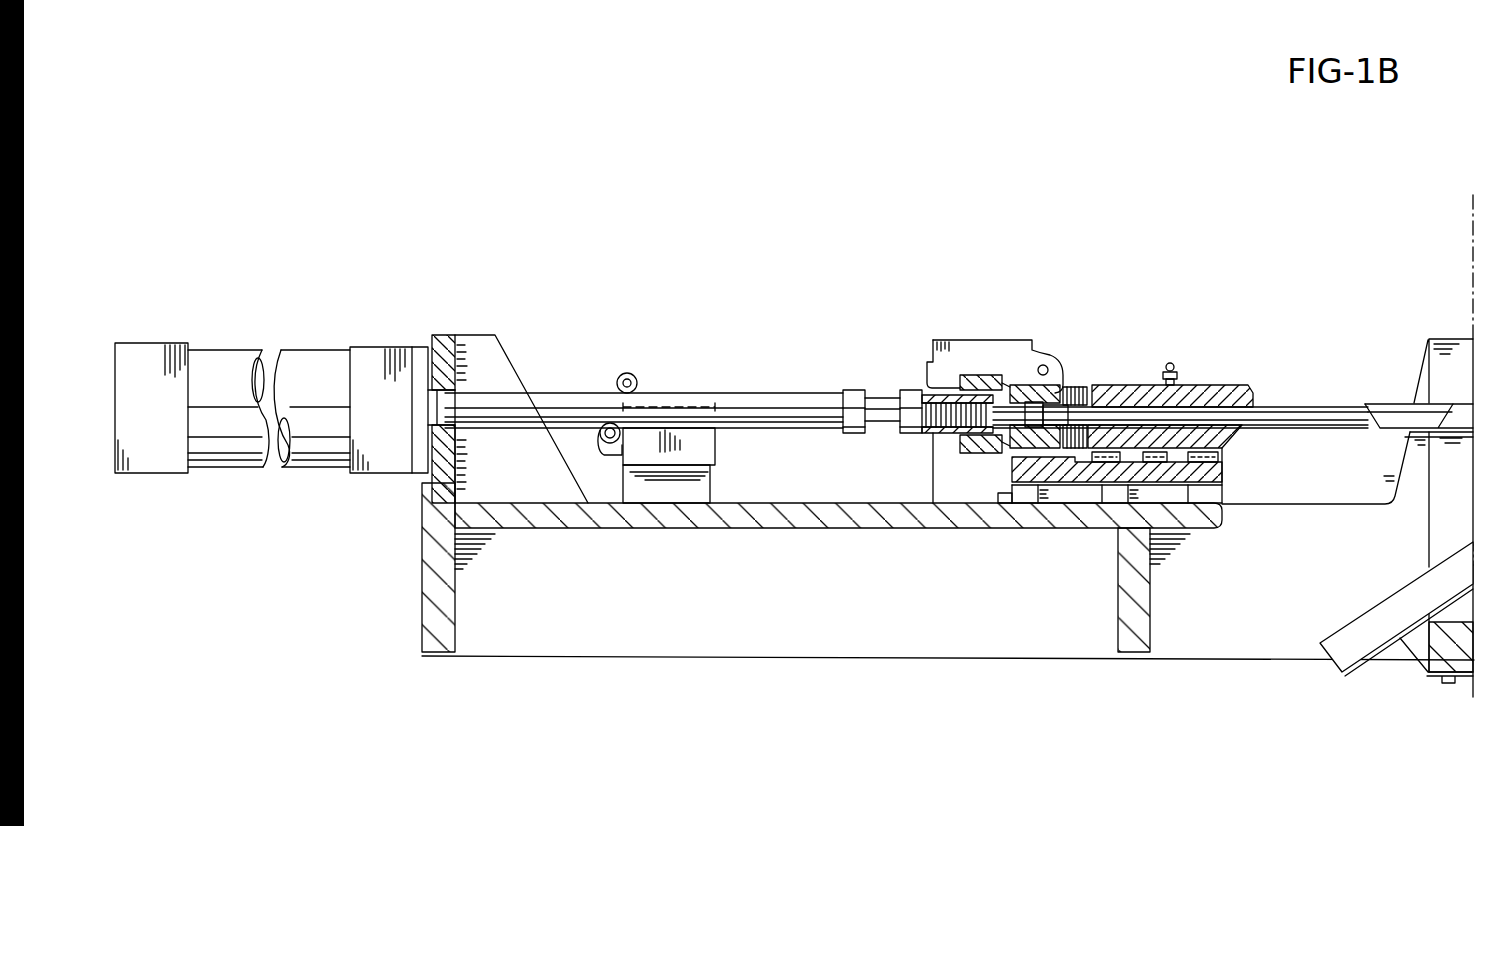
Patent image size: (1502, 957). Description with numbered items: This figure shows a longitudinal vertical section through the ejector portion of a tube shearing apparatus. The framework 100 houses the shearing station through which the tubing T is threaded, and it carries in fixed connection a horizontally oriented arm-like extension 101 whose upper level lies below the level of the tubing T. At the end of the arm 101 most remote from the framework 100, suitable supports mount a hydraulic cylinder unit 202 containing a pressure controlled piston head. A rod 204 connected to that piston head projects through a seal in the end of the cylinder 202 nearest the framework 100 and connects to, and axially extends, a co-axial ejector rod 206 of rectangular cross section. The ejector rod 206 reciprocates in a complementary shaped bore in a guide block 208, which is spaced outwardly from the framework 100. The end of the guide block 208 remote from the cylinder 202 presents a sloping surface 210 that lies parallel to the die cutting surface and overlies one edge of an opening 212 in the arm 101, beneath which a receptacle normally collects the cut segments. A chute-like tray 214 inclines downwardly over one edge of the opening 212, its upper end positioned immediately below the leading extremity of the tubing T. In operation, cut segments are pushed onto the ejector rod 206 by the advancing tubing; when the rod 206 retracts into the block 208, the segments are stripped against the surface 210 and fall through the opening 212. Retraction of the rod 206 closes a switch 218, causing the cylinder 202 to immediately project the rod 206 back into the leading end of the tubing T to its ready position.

The framework 100 is at (1459, 337).
The arm-like extension 101 is at (940, 597).
The hydraulic cylinder unit 202 is at (298, 352).
The rod 204 is at (781, 395).
The ejector rod 206 is at (1123, 410).
The guide block 208 is at (1209, 388).
The sloping surface 210 is at (1236, 432).
The opening 212 is at (1222, 514).
The chute-like tray 214 is at (1398, 598).
The switch 218 is at (715, 445).
The tubing T is at (1380, 405).